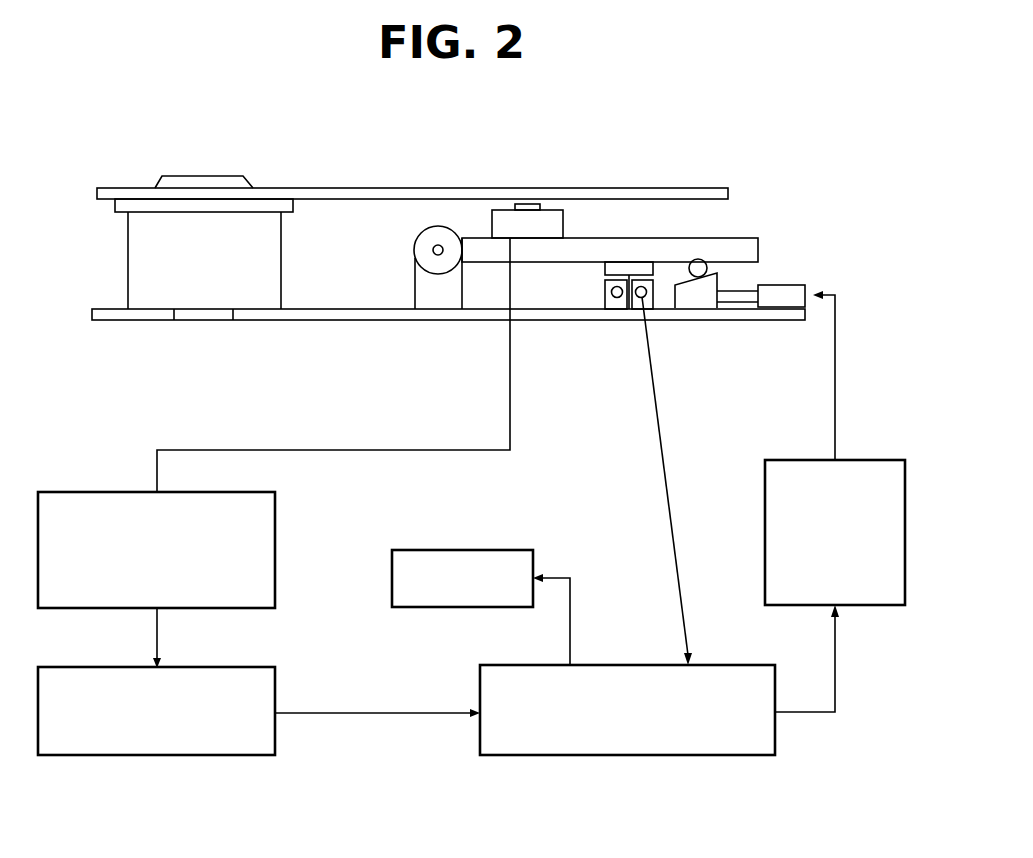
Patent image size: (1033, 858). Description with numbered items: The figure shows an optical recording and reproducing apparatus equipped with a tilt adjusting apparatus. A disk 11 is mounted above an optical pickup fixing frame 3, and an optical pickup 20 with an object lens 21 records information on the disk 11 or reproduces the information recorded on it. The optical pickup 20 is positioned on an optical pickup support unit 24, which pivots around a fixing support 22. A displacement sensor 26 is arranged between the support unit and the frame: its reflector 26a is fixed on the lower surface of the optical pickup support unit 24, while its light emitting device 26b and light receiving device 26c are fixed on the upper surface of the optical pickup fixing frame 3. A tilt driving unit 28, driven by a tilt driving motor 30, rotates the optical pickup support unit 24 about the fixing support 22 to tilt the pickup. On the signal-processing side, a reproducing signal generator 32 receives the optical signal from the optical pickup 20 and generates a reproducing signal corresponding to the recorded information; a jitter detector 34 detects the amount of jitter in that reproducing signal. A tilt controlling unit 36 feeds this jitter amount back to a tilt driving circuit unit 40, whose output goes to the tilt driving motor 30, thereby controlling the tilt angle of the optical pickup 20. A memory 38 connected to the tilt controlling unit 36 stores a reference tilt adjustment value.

The optical pickup fixing frame 3 is at (297, 320).
The disk 11 is at (127, 188).
The optical pickup 20 is at (503, 208).
The object lens 21 is at (537, 205).
The fixing support 22 is at (433, 258).
The optical pickup support unit 24 is at (725, 237).
The displacement sensor 26 is at (623, 271).
The reflector 26a is at (635, 262).
The light emitting device 26b is at (612, 298).
The light receiving device 26c is at (635, 295).
The tilt driving unit 28 is at (707, 292).
The tilt driving motor 30 is at (790, 285).
The reproducing signal generator 32 is at (275, 527).
The jitter detector 34 is at (275, 690).
The tilt controlling unit 36 is at (627, 755).
The memory 38 is at (475, 550).
The tilt driving circuit unit 40 is at (883, 460).